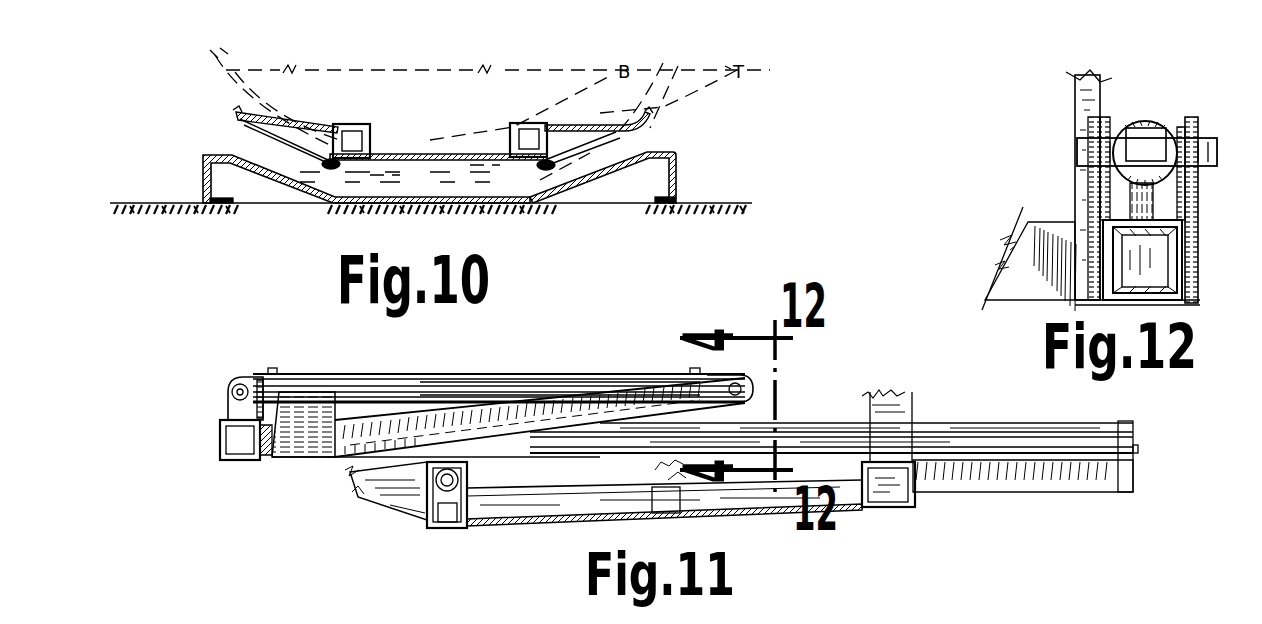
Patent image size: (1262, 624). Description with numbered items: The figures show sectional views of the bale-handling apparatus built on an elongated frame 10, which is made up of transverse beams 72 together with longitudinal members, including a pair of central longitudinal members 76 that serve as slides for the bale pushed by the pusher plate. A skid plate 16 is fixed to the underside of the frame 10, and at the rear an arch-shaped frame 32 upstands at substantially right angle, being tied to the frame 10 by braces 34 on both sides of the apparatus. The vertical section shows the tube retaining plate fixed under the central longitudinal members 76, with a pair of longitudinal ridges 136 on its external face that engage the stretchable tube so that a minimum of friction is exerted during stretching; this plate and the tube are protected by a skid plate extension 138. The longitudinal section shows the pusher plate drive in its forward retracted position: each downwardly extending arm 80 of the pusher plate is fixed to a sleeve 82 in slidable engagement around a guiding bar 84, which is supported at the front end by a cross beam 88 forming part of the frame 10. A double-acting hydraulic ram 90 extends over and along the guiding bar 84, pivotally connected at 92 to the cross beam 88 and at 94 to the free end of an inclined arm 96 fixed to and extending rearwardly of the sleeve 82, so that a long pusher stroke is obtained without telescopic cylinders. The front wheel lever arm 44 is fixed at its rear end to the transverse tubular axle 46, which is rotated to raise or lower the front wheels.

In FIG. 11, the frame 10 is at (883, 513).
In FIG. 12, the frame 10 is at (997, 258).
In FIG. 11, the skid plate 16 is at (462, 530).
In FIG. 11, the arch-shaped frame 32 is at (888, 400).
In FIG. 11, the braces 34 is at (548, 522).
In FIG. 11, the lever arm 44 is at (382, 497).
In FIG. 11, the transverse tubular axle 46 is at (432, 508).
In FIG. 11, the transverse beams 72 is at (912, 508).
In FIG. 10, the central longitudinal members 76 is at (512, 124).
In FIG. 11, the downwardly extending arms 80 is at (316, 399).
In FIG. 11, the sleeve 82 is at (381, 430).
In FIG. 12, the sleeve 82 is at (1175, 292).
In FIG. 11, the guiding bar 84 is at (832, 425).
In FIG. 12, the guiding bar 84 is at (1183, 262).
In FIG. 11, the cross beam 88 is at (218, 430).
In FIG. 12, the cross beam 88 is at (1020, 223).
In FIG. 11, the double-acting hydraulic ram 90 is at (372, 391).
In FIG. 12, the double-acting hydraulic ram 90 is at (1148, 122).
In FIG. 11, the pivotal connection 92 is at (240, 388).
In FIG. 12, the pivotal connection 92 is at (1207, 138).
In FIG. 11, the pivotal connection 94 is at (678, 380).
In FIG. 11, the inclined arm 96 is at (480, 398).
In FIG. 10, the longitudinal ridges 136 is at (548, 203).
In FIG. 10, the skid plate extension 138 is at (660, 152).